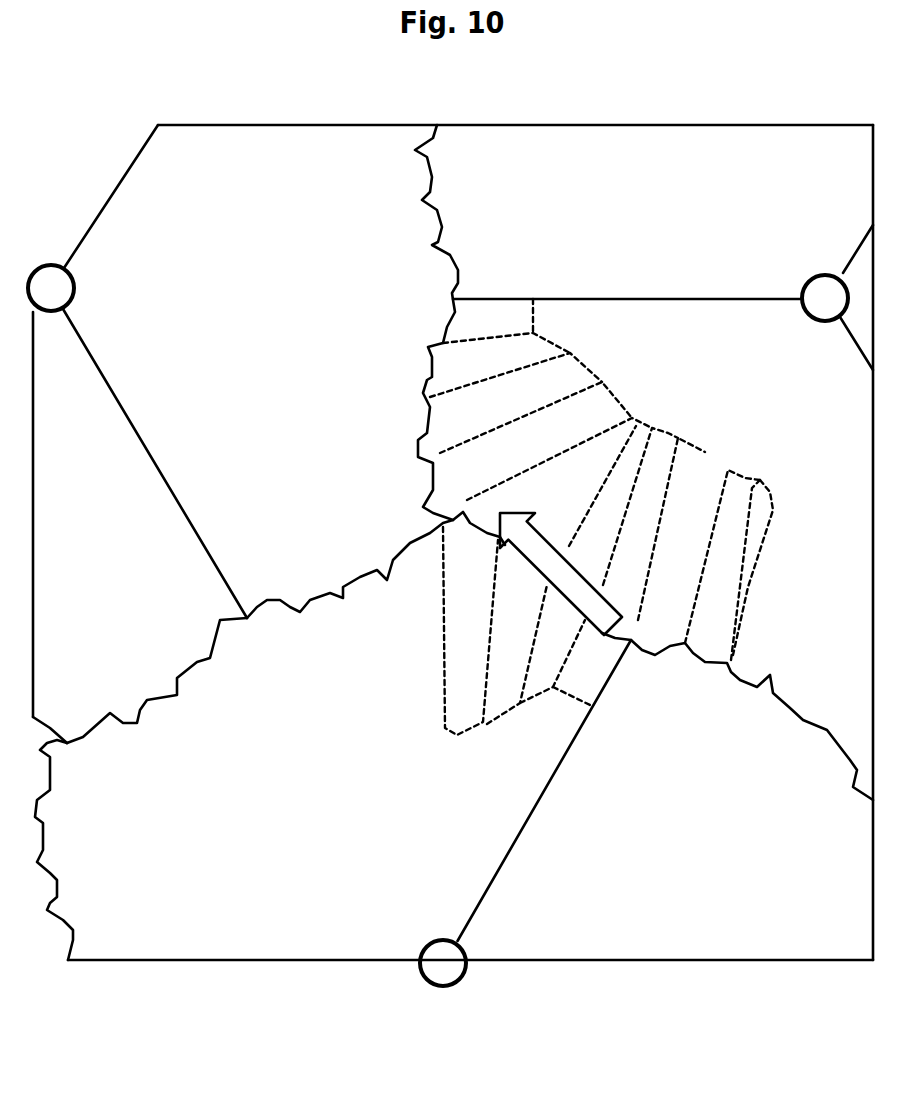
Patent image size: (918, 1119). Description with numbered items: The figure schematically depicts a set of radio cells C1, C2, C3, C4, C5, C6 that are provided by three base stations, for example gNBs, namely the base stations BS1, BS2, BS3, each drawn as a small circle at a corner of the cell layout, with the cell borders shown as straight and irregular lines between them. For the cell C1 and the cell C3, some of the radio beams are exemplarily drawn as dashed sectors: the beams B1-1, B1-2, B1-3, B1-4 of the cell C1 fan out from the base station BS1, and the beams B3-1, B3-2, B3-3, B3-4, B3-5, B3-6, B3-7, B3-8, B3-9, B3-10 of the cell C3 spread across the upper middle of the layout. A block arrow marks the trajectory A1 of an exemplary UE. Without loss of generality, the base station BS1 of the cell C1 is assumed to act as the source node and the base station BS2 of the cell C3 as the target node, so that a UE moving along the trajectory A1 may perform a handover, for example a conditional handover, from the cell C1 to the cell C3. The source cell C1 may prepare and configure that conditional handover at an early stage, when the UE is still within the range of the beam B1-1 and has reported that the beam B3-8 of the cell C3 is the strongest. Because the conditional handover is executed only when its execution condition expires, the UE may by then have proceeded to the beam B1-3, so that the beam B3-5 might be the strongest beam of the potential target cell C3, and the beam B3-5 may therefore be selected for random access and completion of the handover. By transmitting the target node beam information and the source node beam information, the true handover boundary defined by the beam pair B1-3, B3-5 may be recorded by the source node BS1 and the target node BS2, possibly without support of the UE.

The base station BS1 is at (399, 932).
The base station BS2 is at (784, 261).
The base station BS3 is at (114, 288).
The cell C1 is at (317, 794).
The cell C2 is at (695, 866).
The cell C3 is at (785, 346).
The cell C4 is at (578, 202).
The cell C5 is at (292, 346).
The cell C6 is at (115, 534).
The trajectory A1 is at (595, 641).
The beam B1-1 is at (590, 730).
The beam B1-2 is at (535, 704).
The beam B1-3 is at (476, 699).
The beam B1-4 is at (424, 631).
The beam B3-1 is at (529, 284).
The beam B3-2 is at (507, 370).
The beam B3-3 is at (504, 422).
The beam B3-4 is at (536, 425).
The beam B3-5 is at (559, 459).
The beam B3-6 is at (623, 465).
The beam B3-7 is at (685, 493).
The beam B3-8 is at (738, 510).
The beam B3-9 is at (782, 531).
The beam B3-10 is at (785, 567).